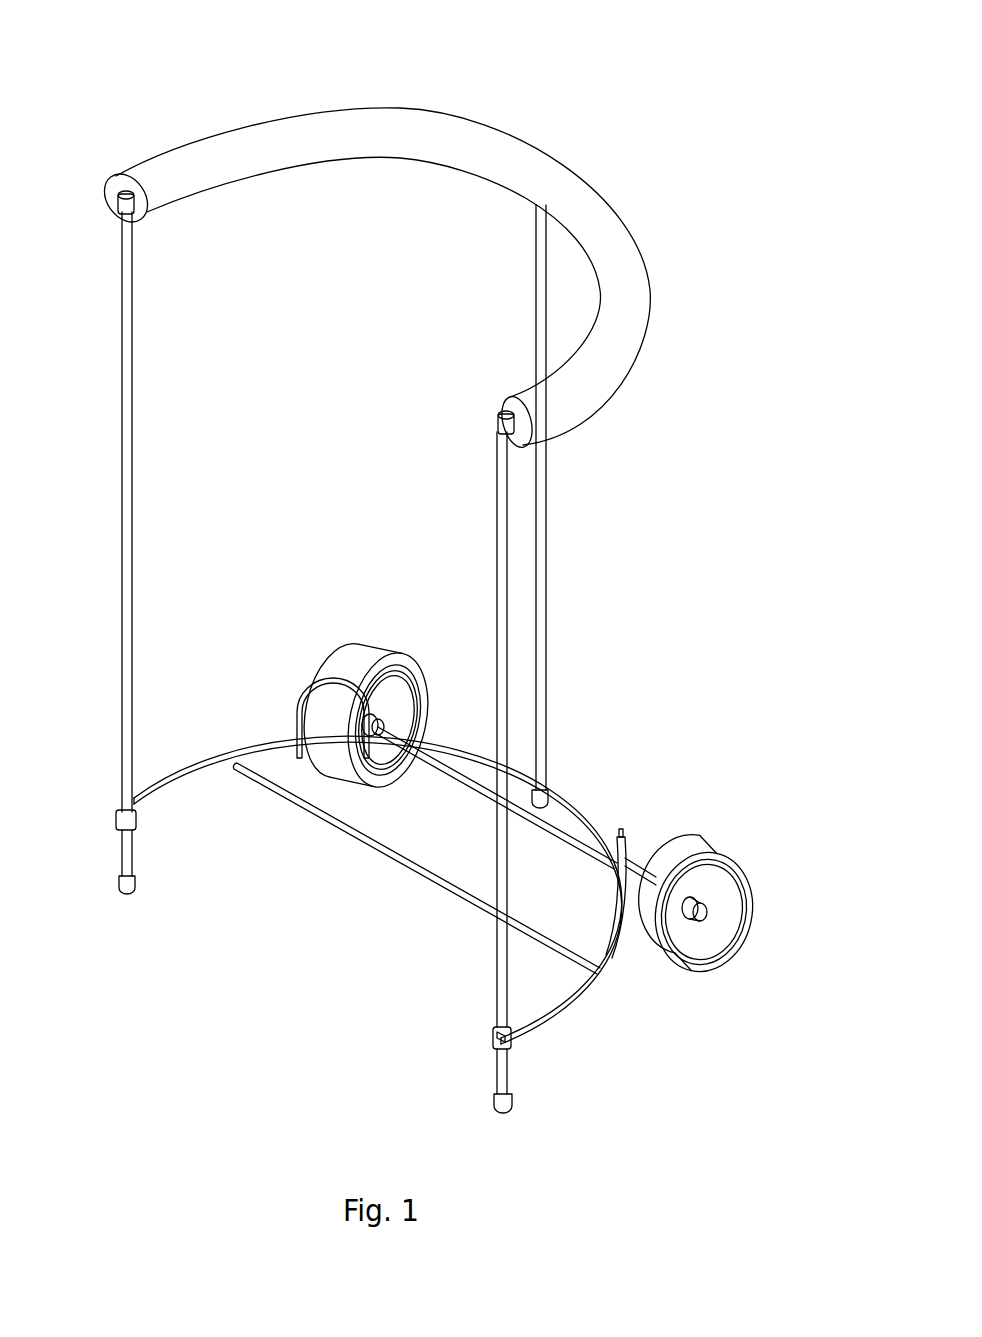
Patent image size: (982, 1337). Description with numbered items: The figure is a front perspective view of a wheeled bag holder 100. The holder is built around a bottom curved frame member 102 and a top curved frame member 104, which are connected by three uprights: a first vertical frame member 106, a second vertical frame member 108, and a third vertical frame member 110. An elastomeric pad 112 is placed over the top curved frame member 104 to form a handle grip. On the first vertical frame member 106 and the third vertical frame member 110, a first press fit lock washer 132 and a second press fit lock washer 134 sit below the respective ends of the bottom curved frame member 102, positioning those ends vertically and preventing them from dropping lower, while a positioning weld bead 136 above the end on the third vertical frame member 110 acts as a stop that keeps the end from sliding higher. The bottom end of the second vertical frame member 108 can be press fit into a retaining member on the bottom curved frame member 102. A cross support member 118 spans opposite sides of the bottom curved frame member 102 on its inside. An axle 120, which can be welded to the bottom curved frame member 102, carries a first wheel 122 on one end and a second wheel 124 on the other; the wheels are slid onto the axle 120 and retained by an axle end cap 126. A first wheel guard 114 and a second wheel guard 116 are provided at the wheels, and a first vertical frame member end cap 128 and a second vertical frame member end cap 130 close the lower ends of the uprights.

The wheeled bag holder 100 is at (140, 68).
The bottom curved frame member 102 is at (568, 812).
The top curved frame member 104 is at (118, 210).
The first vertical frame member 106 is at (125, 520).
The second vertical frame member 108 is at (542, 525).
The third vertical frame member 110 is at (507, 628).
The elastomeric pad 112 is at (553, 179).
The first wheel guard 114 is at (299, 695).
The second wheel guard 116 is at (621, 845).
The cross support member 118 is at (370, 847).
The axle 120 is at (633, 873).
The first wheel 122 is at (367, 663).
The second wheel 124 is at (706, 848).
The axle end cap 126 is at (705, 917).
The first vertical frame member end cap 128 is at (127, 893).
The second vertical frame member end cap 130 is at (510, 1113).
The first press fit lock washer 132 is at (136, 826).
The second press fit lock washer 134 is at (491, 1040).
The positioning weld bead 136 is at (507, 1026).